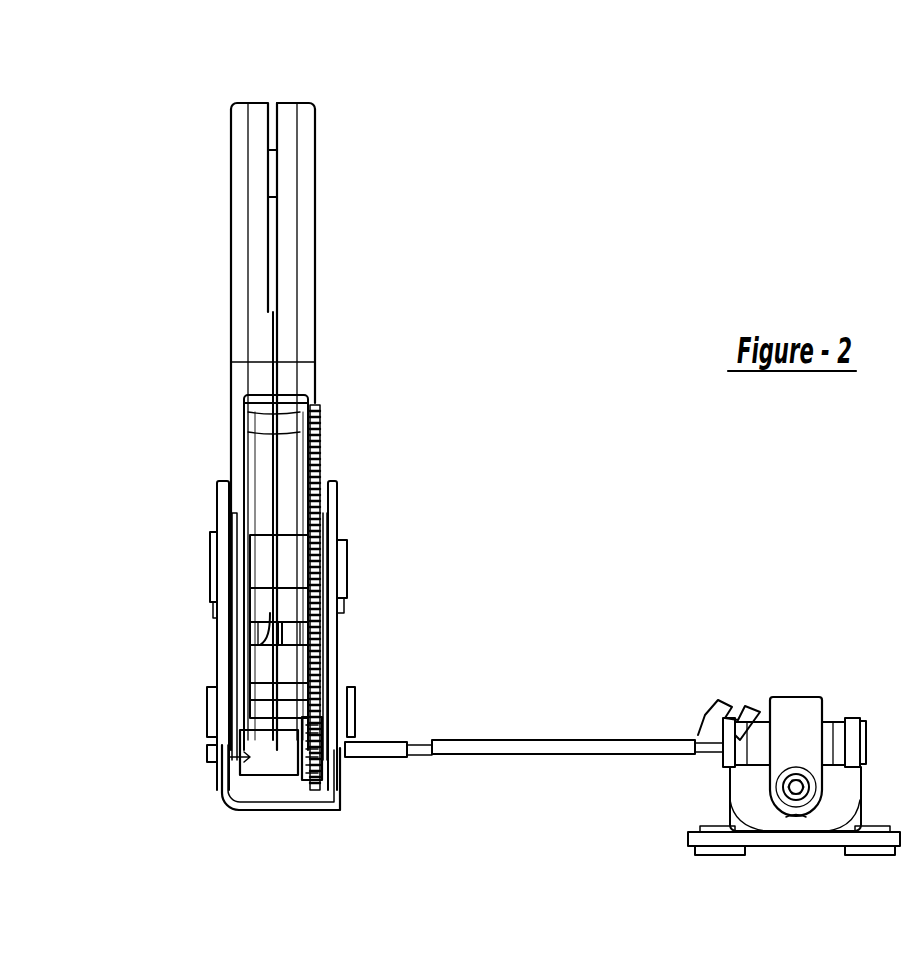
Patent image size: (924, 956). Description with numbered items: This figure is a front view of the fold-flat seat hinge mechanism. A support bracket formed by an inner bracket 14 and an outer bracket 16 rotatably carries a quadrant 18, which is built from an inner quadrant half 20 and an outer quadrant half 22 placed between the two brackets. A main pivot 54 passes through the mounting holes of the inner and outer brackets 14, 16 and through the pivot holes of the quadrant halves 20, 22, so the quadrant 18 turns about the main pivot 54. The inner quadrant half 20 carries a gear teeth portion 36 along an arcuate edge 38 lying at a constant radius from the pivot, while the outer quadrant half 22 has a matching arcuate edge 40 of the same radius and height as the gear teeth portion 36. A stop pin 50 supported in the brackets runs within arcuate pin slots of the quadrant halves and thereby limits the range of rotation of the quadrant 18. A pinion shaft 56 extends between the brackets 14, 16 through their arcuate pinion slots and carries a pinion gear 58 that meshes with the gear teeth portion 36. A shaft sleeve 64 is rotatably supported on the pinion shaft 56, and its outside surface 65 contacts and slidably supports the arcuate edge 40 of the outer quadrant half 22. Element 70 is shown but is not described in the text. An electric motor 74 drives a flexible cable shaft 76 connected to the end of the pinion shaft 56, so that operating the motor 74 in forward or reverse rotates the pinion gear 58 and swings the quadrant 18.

The inner bracket 14 is at (335, 498).
The outer bracket 16 is at (222, 498).
The quadrant 18 is at (279, 101).
The inner quadrant half 20 is at (303, 190).
The outer quadrant half 22 is at (240, 193).
The gear teeth portion 36 is at (316, 560).
The arcuate edge 38 is at (318, 602).
The arcuate edge 40 is at (246, 670).
The stop pin 50 is at (265, 648).
The main pivot 54 is at (210, 556).
The pinion shaft 56 is at (368, 748).
The pinion gear 58 is at (312, 780).
The shaft sleeve 64 is at (262, 772).
The outside surface 65 is at (226, 755).
The bracket 70 is at (212, 718).
The electric motor 74 is at (800, 700).
The cable shaft 76 is at (550, 748).